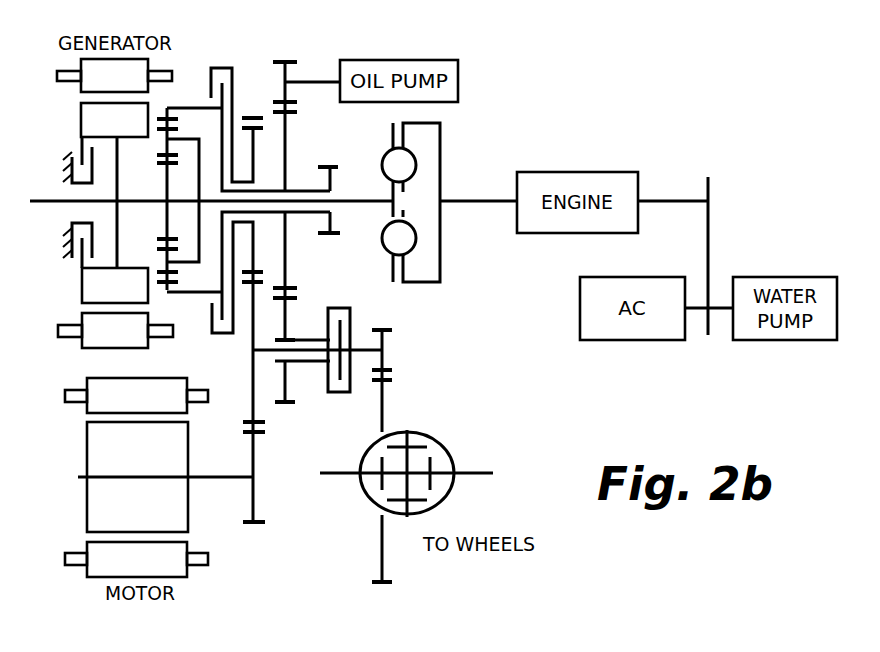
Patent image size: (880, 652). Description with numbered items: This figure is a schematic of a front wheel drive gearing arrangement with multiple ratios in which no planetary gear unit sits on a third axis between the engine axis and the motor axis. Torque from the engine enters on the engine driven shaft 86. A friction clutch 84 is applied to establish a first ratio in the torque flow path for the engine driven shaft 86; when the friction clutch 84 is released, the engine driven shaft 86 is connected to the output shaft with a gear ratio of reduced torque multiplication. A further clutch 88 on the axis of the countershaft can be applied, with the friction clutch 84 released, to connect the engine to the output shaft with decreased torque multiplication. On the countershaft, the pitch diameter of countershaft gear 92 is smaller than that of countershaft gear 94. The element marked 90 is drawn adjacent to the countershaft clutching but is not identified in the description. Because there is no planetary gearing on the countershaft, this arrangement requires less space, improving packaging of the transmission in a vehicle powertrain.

The friction clutch 84 is at (222, 67).
The engine driven shaft 86 is at (347, 199).
The clutch 88 is at (352, 369).
The clutch 90 is at (302, 362).
The countershaft gear 92 is at (392, 331).
The countershaft gear 94 is at (283, 405).